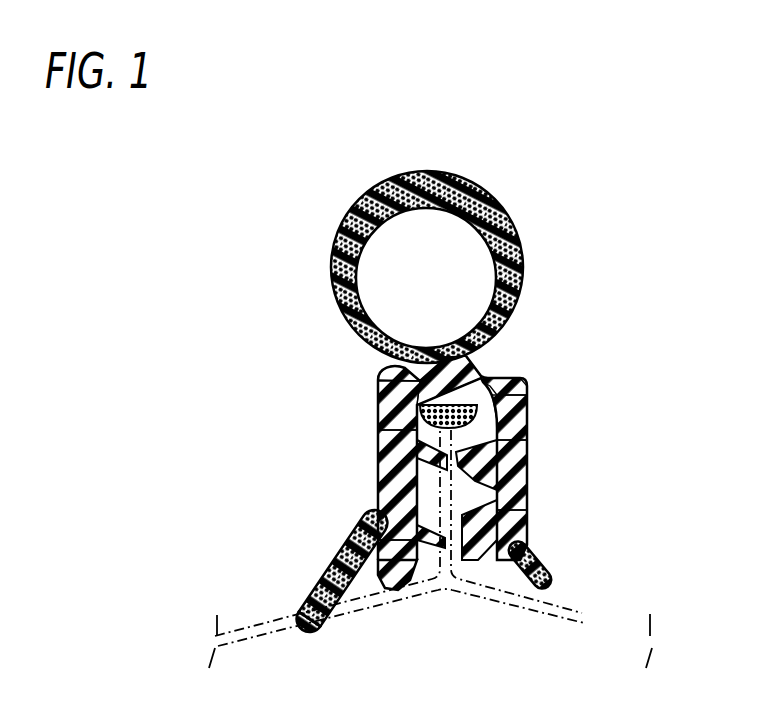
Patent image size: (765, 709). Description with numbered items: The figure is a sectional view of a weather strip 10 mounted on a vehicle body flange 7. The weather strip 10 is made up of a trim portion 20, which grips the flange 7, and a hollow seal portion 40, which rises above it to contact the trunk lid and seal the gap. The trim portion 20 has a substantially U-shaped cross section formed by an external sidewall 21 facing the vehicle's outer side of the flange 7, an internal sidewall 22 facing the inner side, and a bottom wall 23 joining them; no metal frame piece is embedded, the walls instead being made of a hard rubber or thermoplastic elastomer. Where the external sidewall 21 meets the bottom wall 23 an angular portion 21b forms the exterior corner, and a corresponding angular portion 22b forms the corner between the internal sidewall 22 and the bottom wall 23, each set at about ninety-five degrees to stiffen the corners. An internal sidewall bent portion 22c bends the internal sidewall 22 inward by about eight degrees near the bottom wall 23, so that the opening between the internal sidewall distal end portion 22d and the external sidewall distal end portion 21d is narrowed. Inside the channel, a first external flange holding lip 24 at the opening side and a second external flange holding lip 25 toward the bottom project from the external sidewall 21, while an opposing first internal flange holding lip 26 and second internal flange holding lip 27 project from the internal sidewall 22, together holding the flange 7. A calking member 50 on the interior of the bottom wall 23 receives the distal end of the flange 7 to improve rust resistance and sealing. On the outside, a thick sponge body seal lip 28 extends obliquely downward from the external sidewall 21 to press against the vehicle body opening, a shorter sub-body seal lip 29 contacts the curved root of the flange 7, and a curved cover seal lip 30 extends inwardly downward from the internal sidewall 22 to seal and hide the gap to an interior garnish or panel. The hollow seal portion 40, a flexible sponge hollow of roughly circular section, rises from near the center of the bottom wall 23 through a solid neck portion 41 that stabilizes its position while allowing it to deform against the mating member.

The weather strip 10 is at (298, 273).
The flange 7 is at (416, 549).
The trim portion 20 is at (344, 458).
The external sidewall 21 is at (303, 489).
The angular portion 21b is at (284, 384).
The external sidewall distal end portion 21d is at (411, 618).
The internal sidewall 22 is at (584, 478).
The angular portion 22b is at (584, 375).
The internal sidewall bent portion 22c is at (590, 417).
The internal sidewall distal end portion 22d is at (592, 535).
The bottom wall 23 is at (291, 342).
The first external flange holding lip 24 is at (277, 565).
The second external flange holding lip 25 is at (304, 461).
The first internal flange holding lip 26 is at (481, 598).
The second internal flange holding lip 27 is at (564, 464).
The body seal lip 28 is at (241, 612).
The sub-body seal lip 29 is at (383, 628).
The cover seal lip 30 is at (588, 569).
The hollow seal portion 40 is at (501, 267).
The neck portion 41 is at (544, 355).
The calking member 50 is at (319, 401).